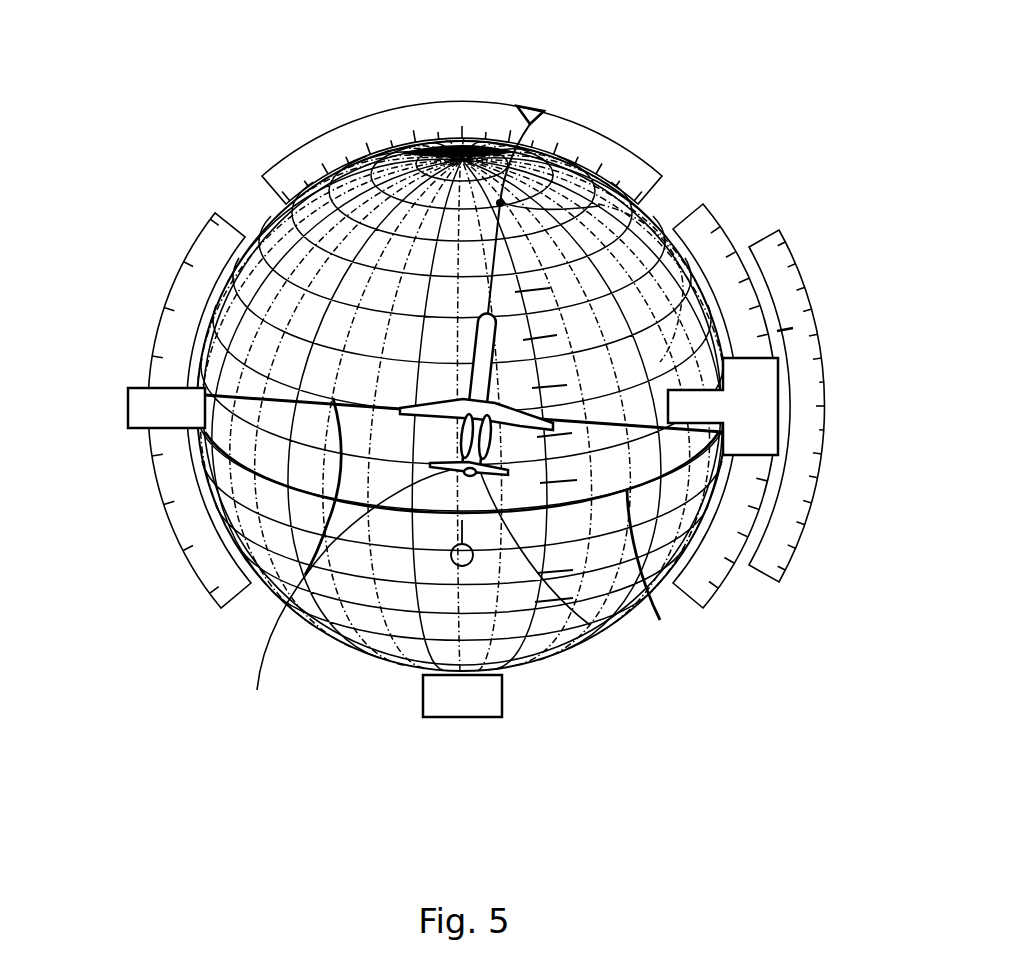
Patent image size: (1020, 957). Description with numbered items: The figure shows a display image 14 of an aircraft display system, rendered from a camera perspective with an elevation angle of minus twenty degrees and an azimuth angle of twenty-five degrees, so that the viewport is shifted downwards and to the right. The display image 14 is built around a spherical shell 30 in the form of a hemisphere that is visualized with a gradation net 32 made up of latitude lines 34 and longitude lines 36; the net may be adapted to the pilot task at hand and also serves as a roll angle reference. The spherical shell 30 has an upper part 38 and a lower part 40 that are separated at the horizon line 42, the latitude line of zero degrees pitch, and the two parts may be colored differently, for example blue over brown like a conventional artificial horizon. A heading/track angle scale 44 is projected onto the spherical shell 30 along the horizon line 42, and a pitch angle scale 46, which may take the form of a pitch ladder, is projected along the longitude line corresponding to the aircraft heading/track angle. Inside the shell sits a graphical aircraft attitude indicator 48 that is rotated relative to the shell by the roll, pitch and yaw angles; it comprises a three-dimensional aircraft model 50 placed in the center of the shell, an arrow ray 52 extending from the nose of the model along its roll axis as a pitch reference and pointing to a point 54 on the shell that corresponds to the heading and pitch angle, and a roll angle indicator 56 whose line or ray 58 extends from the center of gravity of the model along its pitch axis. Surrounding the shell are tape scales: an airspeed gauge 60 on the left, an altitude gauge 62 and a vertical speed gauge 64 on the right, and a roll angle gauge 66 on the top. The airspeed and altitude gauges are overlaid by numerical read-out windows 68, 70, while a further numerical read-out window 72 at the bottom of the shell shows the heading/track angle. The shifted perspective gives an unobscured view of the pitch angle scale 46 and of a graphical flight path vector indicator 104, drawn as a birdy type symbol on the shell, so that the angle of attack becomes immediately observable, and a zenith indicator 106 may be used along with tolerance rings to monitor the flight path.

The display image 14 is at (695, 85).
The spherical shell 30 is at (305, 575).
The gradation net 32 is at (380, 640).
The latitude lines 34 is at (505, 672).
The longitude lines 36 is at (387, 660).
The upper part 38 is at (337, 300).
The lower part 40 is at (540, 672).
The horizon line 42 is at (661, 622).
The heading/track angle scale 44 is at (237, 503).
The pitch angle scale 46 is at (557, 193).
The graphical aircraft attitude indicator 48 is at (660, 359).
The three-dimensional aircraft model 50 is at (577, 613).
The arrow ray 52 is at (526, 246).
The point 54 is at (530, 122).
The roll angle indicator 56 is at (305, 391).
The line or ray 58 is at (442, 590).
The airspeed gauge 60 is at (183, 300).
The altitude gauge 62 is at (710, 228).
The vertical speed gauge 64 is at (800, 350).
The roll angle gauge 66 is at (286, 158).
The numerical read-out window 68 is at (128, 405).
The numerical read-out window 70 is at (780, 420).
The numerical read-out window 72 is at (430, 717).
The graphical flight path vector indicator 104 is at (452, 560).
The zenith indicator 106 is at (462, 405).